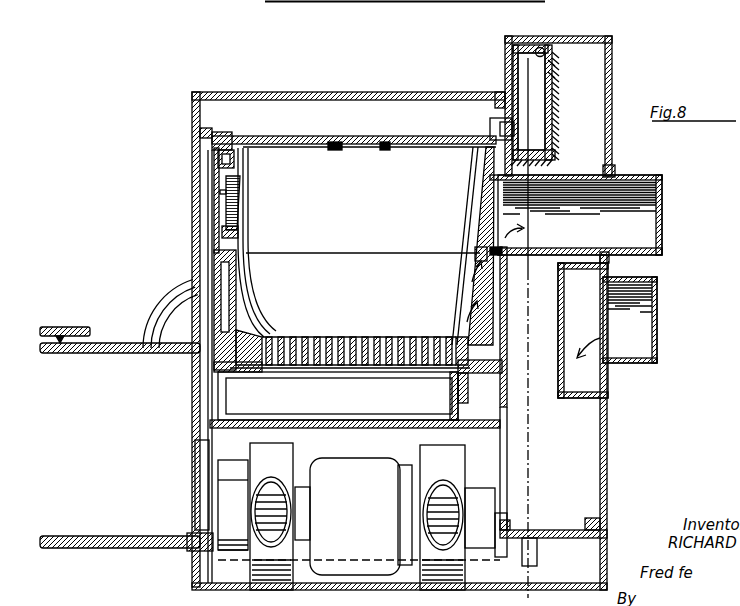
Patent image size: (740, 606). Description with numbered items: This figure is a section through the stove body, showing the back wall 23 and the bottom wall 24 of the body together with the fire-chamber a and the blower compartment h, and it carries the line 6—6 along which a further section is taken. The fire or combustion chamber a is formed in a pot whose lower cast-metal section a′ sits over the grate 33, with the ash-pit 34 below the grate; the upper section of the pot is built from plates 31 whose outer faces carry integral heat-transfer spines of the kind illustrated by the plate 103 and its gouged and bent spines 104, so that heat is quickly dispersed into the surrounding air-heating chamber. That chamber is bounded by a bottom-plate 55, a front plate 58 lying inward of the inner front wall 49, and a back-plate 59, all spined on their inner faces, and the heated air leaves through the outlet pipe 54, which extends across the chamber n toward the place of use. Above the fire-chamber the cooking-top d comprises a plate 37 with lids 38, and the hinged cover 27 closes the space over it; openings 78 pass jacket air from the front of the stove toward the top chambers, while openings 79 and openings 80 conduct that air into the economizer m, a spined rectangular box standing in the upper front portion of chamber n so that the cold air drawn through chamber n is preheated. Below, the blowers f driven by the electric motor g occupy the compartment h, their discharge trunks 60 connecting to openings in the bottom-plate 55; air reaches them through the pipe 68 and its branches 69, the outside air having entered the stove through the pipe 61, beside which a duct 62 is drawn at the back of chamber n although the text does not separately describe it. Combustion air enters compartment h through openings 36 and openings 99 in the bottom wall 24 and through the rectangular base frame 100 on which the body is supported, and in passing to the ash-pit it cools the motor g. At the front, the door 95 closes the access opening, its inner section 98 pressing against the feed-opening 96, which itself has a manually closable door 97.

The section line 6— 6 is at (547, 31).
The plate or wall 103 is at (544, 48).
The spines 104 is at (558, 74).
The economizer m is at (560, 80).
The chamber n is at (572, 105).
The openings 79 is at (514, 132).
The openings 80 is at (490, 128).
The hinged cover 27 is at (345, 88).
The cooking-top d is at (384, 143).
The openings 78 is at (200, 136).
The lids 38 is at (310, 131).
The plate 37 is at (345, 150).
The door 97 is at (238, 206).
The feed-opening 96 is at (238, 233).
The plates 31 is at (470, 207).
The front plate 58 is at (214, 280).
The lower cast-metal section a′ is at (312, 304).
The fire-chamber a is at (359, 242).
The back-plate 59 is at (507, 294).
The inner section 98 is at (71, 327).
The door 95 is at (116, 353).
The bottom-plate 55 is at (216, 370).
The grate 33 is at (318, 367).
The ash-pit 34 is at (344, 394).
The outlet pipe 54 is at (645, 190).
The pipe 61 is at (657, 341).
The duct 62 is at (582, 394).
The inner front wall 49 is at (210, 424).
The openings 36 is at (208, 456).
The branches 69 is at (230, 465).
The blowers f is at (357, 516).
The compartment h is at (355, 447).
The pipe 68 is at (412, 468).
The electric motor g is at (347, 516).
The discharge trunks 60 is at (312, 530).
The openings 99 is at (507, 426).
The back wall 23 is at (607, 432).
The bottom wall 24 is at (556, 538).
The base frame 100 is at (205, 573).